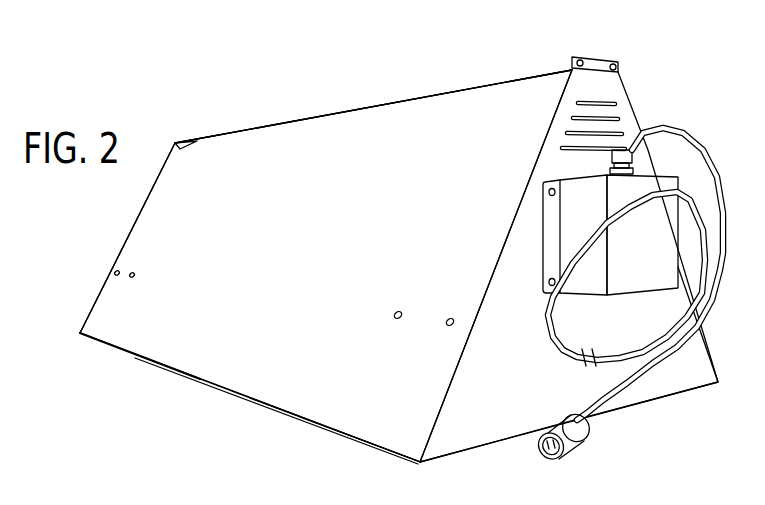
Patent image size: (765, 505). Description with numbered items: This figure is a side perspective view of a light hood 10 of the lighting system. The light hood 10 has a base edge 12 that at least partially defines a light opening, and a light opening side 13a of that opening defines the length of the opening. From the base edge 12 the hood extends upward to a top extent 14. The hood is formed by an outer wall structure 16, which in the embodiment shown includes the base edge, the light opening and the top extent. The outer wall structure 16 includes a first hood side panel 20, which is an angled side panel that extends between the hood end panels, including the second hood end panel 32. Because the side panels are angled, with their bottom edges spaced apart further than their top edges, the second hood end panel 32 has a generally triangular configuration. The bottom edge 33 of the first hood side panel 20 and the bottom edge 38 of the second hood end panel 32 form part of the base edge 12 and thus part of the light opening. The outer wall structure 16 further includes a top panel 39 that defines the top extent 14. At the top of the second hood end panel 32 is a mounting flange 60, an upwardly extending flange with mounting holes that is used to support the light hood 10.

The light hood 10 is at (160, 100).
The base edge 12 is at (255, 402).
The light opening side 13a is at (142, 358).
The top extent 14 is at (337, 112).
The outer wall structure 16 is at (333, 452).
The first hood side panel 20 is at (213, 358).
The second hood end panel 32 is at (465, 432).
The bottom edge of first side panel 33 is at (303, 420).
The bottom edge of second end panel 38 is at (642, 402).
The top panel 39 is at (448, 90).
The mounting flange 60 is at (620, 46).